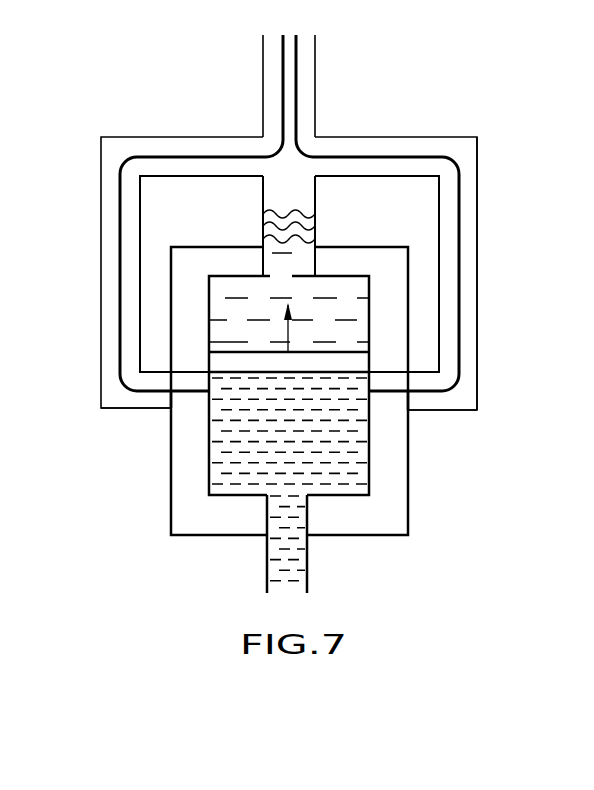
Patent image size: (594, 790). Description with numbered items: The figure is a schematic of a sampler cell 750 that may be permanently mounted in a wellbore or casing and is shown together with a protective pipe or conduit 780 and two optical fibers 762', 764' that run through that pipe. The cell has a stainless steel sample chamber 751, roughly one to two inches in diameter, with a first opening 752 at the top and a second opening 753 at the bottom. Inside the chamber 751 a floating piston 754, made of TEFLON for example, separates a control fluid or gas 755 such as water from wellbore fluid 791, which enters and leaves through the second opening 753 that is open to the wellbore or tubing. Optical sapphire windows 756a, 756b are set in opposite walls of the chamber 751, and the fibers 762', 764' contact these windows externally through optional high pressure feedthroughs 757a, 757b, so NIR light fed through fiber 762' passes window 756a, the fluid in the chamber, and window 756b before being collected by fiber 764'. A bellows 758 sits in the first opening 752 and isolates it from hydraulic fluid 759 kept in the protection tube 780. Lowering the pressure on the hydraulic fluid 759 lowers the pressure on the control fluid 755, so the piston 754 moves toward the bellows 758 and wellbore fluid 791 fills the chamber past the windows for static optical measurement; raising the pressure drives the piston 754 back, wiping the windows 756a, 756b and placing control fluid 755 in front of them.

The sampler cell 750 is at (505, 98).
The sample chamber 751 is at (192, 507).
The first opening 752 is at (265, 187).
The second opening 753 is at (268, 506).
The floating piston 754 is at (242, 352).
The control fluid or gas 755 is at (350, 332).
The optical sapphire window 756a is at (387, 400).
The optical sapphire window 756b is at (185, 403).
The high pressure feedthrough 757a is at (425, 400).
The high pressure feedthrough 757b is at (150, 400).
The bellows 758 is at (263, 222).
The hydraulic fluid 759 is at (463, 402).
The optical fiber 762' is at (420, 213).
The optical fiber 764' is at (201, 213).
The protective pipe or conduit 780 is at (315, 76).
The wellbore fluid 791 is at (278, 572).